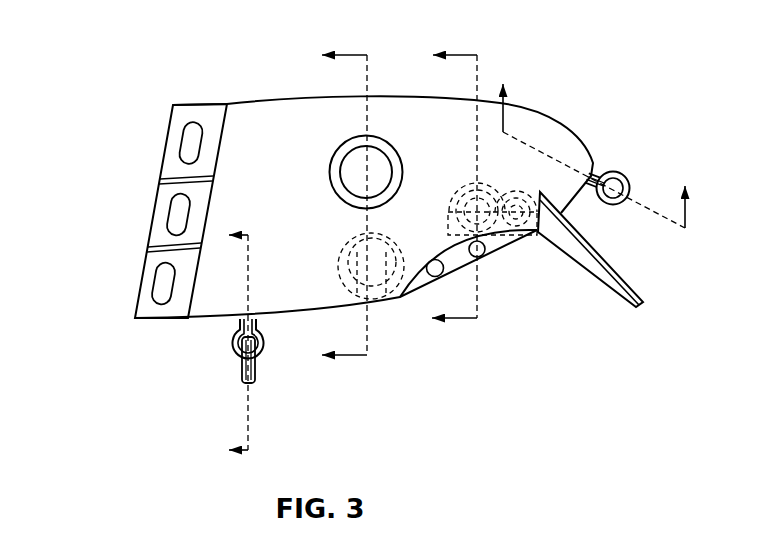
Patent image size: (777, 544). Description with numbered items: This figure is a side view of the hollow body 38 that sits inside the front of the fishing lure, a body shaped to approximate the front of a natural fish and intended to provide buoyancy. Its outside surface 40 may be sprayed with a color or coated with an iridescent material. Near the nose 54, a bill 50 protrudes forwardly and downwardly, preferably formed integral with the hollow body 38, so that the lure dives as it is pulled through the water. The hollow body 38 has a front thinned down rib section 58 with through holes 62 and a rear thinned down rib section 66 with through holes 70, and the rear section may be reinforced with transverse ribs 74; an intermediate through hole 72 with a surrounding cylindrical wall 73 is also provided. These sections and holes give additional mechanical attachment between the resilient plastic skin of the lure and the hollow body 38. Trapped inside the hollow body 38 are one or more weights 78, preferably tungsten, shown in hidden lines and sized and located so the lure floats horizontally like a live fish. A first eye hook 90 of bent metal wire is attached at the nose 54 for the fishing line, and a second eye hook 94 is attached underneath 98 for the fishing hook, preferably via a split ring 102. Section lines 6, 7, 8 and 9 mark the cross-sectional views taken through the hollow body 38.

The hollow body 38 is at (563, 101).
The outside surface 40 is at (280, 101).
The bill 50 is at (618, 291).
The nose 54 is at (600, 150).
The front thinned down rib section 58 is at (493, 251).
The through holes 62 is at (433, 262).
The rear thinned down rib section 66 is at (172, 170).
The through holes 70 is at (186, 131).
The intermediate through hole 72 is at (362, 156).
The cylindrical wall 73 is at (333, 173).
The transverse ribs 74 is at (148, 248).
The weights 78 is at (362, 265).
The first eye hook 90 is at (614, 172).
The second eye hook 94 is at (233, 343).
The underneath 98 is at (280, 372).
The split ring 102 is at (238, 374).
The section line 6- 6 is at (333, 205).
The section line 7- 7 is at (444, 187).
The section line 8- 8 is at (594, 143).
The section line 9- 9 is at (229, 344).